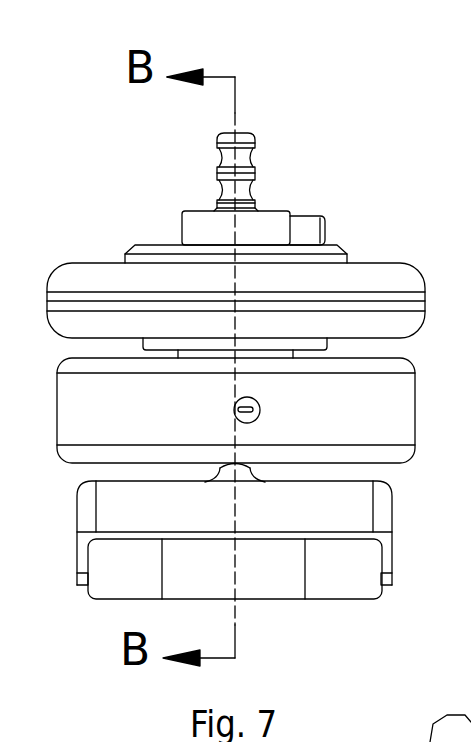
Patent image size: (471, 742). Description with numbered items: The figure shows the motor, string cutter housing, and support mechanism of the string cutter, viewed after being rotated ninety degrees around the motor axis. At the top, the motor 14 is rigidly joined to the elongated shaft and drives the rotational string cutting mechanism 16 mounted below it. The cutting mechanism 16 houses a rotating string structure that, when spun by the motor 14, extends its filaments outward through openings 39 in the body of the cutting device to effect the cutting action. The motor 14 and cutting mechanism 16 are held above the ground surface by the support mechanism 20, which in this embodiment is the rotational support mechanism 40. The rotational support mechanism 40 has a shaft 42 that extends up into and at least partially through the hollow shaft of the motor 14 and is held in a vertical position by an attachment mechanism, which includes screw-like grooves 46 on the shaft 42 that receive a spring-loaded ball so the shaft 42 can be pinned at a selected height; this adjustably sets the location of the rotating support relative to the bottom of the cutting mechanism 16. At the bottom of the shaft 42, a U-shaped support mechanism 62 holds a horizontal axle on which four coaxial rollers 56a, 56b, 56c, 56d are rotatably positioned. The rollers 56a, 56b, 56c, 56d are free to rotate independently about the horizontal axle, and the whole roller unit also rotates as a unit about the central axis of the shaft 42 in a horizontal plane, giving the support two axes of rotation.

The motor 14 is at (413, 268).
The rotational string cutting mechanism 16 is at (413, 365).
The support mechanism 20 is at (257, 400).
The openings 39 is at (253, 422).
The rotational support mechanism 40 is at (408, 486).
The shaft 42 is at (256, 170).
The grooves 46 is at (430, 741).
The coaxial roller 56a is at (115, 602).
The coaxial roller 56b is at (188, 569).
The coaxial roller 56c is at (257, 602).
The coaxial roller 56d is at (348, 602).
The U-shaped support mechanism 62 is at (397, 538).